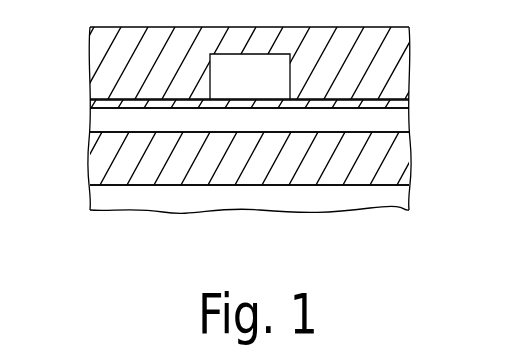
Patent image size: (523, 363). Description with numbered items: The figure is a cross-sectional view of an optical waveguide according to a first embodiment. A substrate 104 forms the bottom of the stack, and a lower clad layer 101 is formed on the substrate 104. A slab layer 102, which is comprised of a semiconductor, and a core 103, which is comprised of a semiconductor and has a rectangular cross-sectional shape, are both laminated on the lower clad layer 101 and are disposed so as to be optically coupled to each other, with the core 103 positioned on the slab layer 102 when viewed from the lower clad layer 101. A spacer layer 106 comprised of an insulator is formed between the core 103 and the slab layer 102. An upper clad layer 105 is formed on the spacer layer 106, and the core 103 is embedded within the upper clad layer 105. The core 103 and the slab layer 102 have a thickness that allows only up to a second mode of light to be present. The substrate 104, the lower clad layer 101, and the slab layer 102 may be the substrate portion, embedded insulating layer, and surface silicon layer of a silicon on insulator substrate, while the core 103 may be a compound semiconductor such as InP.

The lower clad layer 101 is at (411, 164).
The slab layer 102 is at (411, 122).
The core 103 is at (210, 80).
The substrate 104 is at (411, 198).
The upper clad layer 105 is at (411, 67).
The spacer layer 106 is at (411, 102).